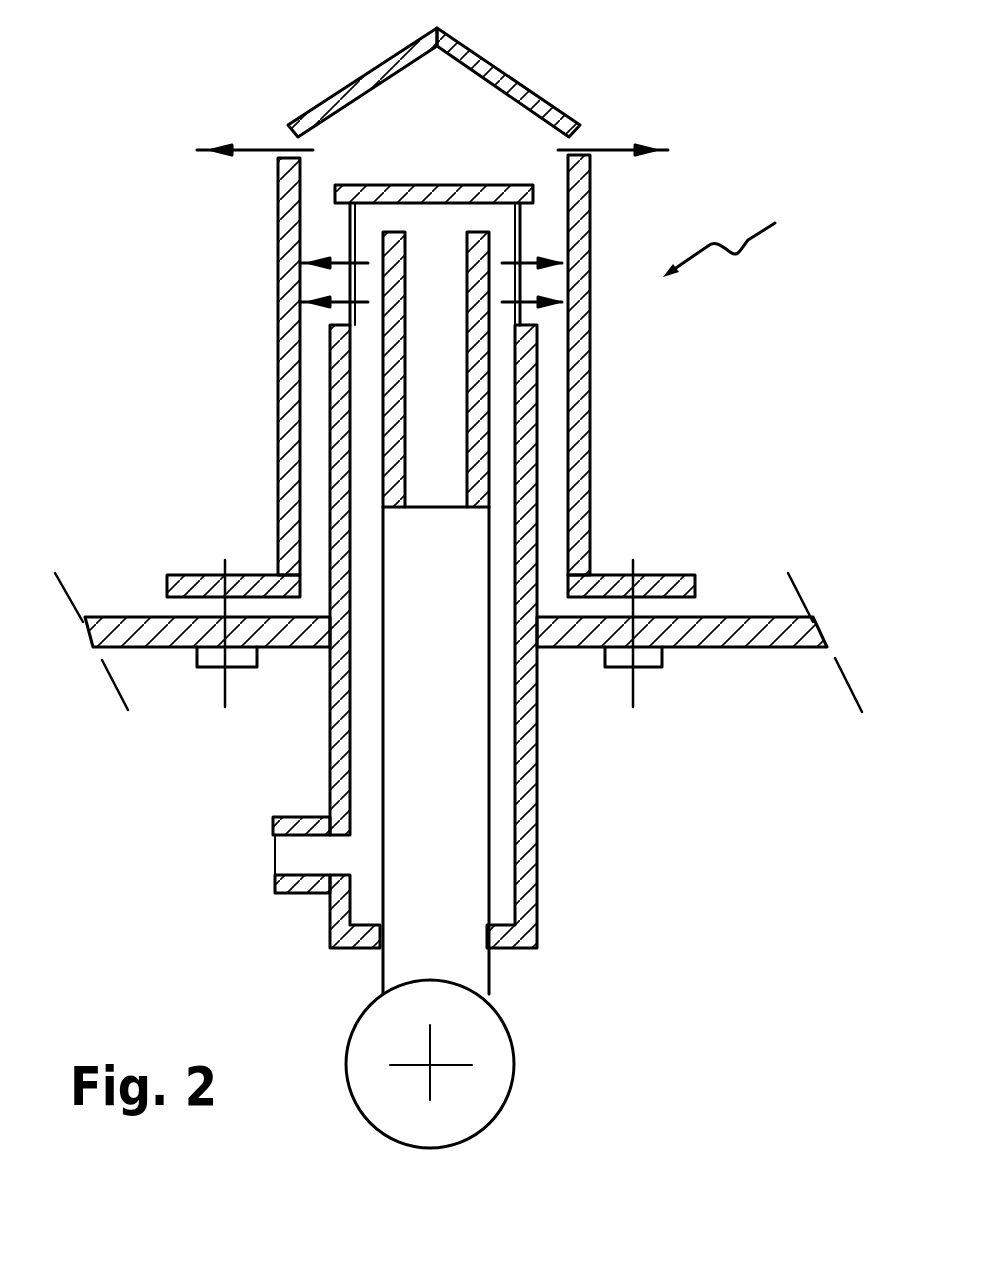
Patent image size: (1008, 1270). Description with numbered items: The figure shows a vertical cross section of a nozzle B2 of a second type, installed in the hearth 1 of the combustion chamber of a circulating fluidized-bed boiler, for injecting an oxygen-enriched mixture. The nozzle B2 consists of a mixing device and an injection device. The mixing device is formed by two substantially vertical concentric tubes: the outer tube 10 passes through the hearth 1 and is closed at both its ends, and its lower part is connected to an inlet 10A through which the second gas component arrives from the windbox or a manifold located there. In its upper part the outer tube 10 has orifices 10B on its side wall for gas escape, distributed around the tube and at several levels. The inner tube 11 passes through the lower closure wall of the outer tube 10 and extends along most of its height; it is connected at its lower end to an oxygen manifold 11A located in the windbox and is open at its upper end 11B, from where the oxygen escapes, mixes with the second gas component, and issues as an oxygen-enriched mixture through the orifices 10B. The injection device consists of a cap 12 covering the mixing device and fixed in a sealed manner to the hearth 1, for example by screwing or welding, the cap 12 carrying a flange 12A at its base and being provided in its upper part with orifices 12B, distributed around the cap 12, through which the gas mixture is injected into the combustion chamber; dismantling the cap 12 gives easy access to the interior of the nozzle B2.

The hearth of the combustion chamber 1 is at (815, 628).
The outer tube 10 is at (542, 872).
The inlet of second gas component 10A is at (272, 862).
The orifices 10B is at (352, 226).
The inner tube 11 is at (489, 745).
The oxygen manifold 11A is at (516, 1048).
The upper end of inner tube 11B is at (440, 237).
The cap 12 is at (272, 416).
The flange of outer cylinder 12A is at (225, 560).
The orifices 12B is at (286, 142).
The nozzle B2 is at (742, 239).